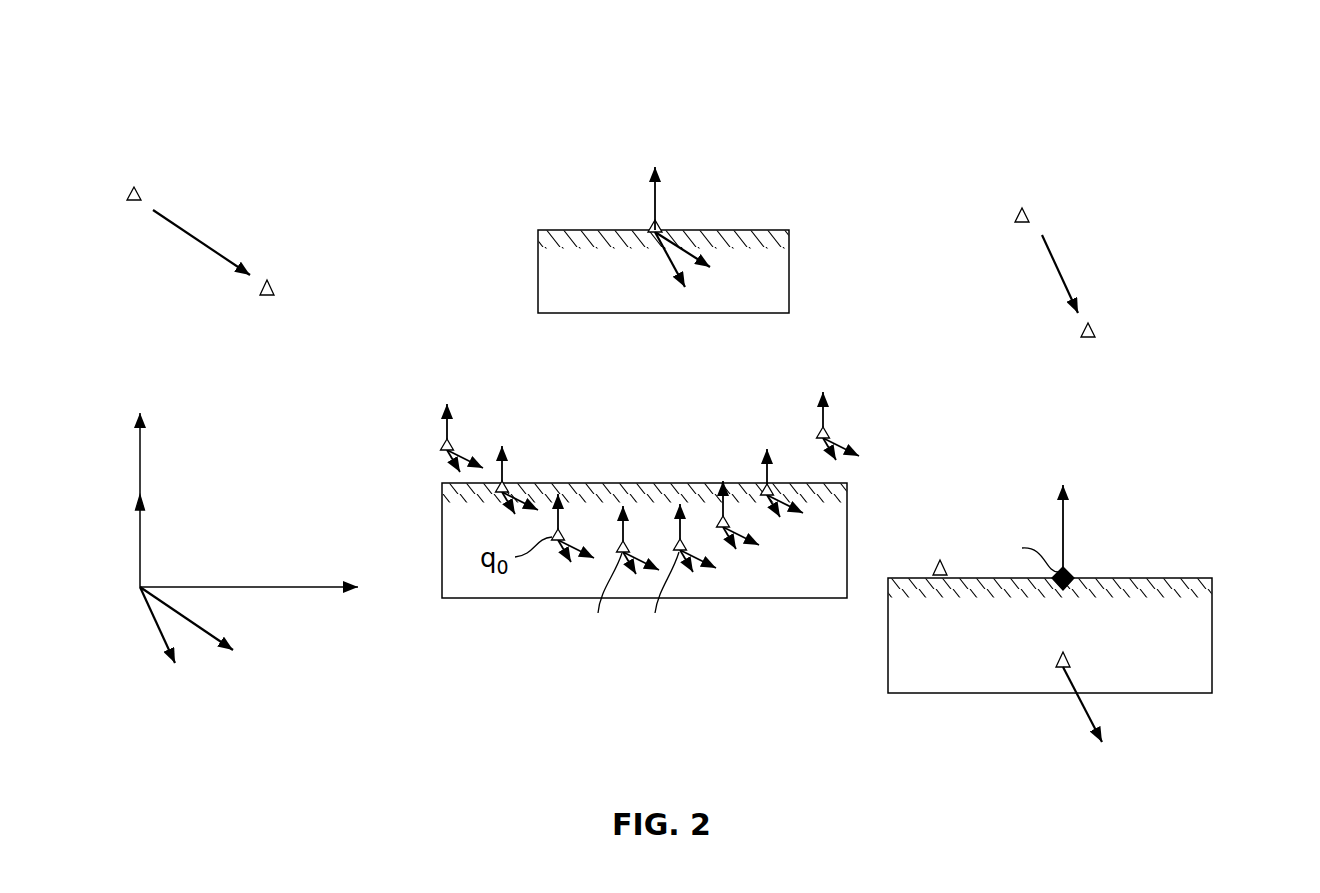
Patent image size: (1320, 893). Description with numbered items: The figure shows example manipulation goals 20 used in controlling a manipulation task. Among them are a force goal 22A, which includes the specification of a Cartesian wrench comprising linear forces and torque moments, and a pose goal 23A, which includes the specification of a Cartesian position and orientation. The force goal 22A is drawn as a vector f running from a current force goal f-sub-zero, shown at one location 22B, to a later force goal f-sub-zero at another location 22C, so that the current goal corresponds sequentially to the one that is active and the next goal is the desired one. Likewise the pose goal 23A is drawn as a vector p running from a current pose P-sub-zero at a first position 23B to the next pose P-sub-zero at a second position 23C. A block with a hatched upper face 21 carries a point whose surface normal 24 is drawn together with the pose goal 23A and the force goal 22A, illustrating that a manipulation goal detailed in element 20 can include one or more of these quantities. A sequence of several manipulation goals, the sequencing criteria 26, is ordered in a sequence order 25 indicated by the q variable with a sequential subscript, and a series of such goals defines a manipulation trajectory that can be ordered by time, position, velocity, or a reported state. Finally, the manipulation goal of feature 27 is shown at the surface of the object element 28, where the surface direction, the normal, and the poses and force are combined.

The manipulation goals 20 is at (650, 228).
The substrate 21 is at (790, 272).
The force goal 22A is at (663, 302).
The initial fiber orientation f0 22B is at (997, 128).
The final fiber orientation f0 22C is at (1167, 308).
The pose goal 23A is at (220, 210).
The initial position P0 23B is at (62, 155).
The final position P0 23C is at (332, 252).
The surface normal 24 is at (177, 515).
The sequencing goal 25 is at (598, 655).
The sequencing criteria 26 is at (657, 655).
The manipulation goal at surface 27 is at (988, 675).
The object element 28 is at (1007, 542).